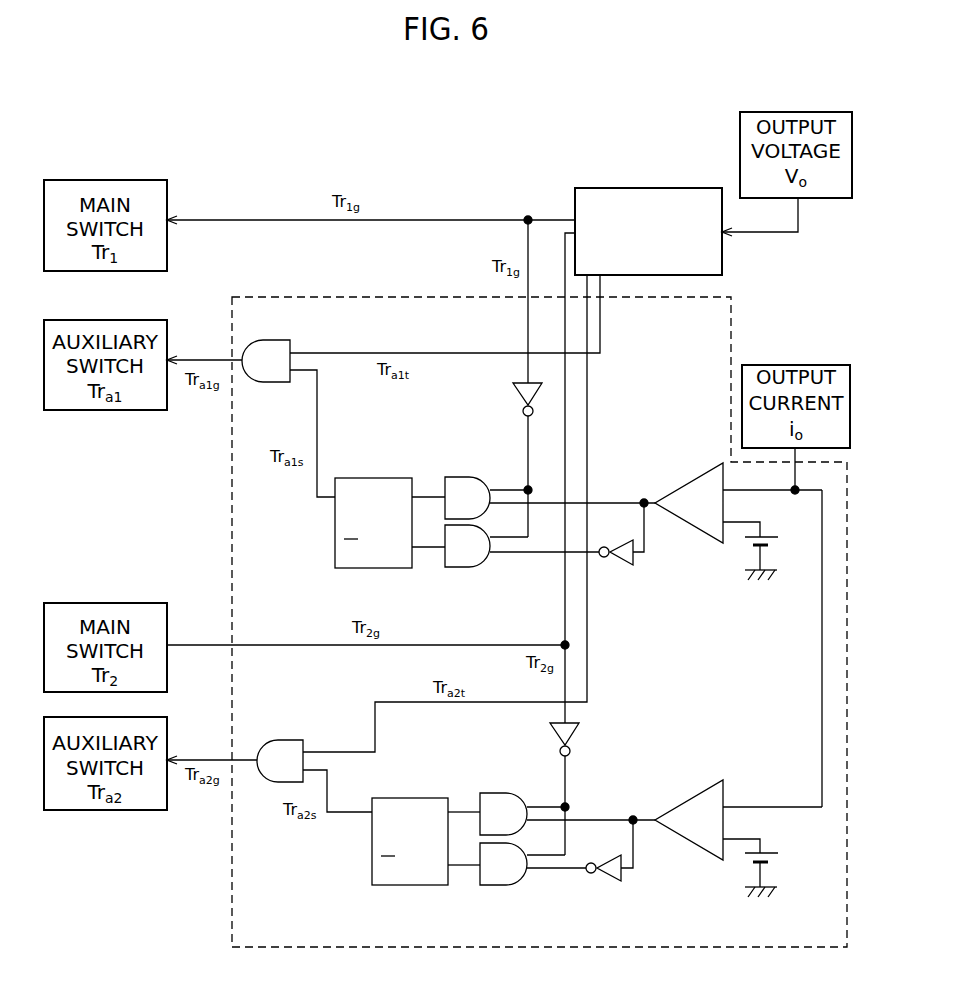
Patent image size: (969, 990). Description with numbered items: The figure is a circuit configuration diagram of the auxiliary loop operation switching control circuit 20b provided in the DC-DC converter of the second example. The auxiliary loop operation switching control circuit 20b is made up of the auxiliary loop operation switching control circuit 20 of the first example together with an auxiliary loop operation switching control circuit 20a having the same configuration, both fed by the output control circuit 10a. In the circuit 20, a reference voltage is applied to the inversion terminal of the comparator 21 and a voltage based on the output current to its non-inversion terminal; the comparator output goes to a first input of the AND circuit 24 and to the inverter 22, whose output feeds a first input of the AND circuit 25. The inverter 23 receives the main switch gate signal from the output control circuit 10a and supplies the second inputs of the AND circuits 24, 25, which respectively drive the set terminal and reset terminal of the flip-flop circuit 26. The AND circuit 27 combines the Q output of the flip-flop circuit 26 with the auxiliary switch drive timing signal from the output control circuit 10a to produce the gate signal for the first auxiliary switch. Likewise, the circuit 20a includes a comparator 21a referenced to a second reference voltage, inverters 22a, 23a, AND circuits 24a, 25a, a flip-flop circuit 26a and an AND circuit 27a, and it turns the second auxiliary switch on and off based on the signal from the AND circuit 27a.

The output control circuit 10a is at (640, 188).
The auxiliary loop operation switching control circuit 20b is at (735, 313).
The auxiliary loop operation switching control circuit 20 is at (656, 535).
The auxiliary loop operation switching control circuit 20a is at (674, 789).
The comparator 21 is at (678, 518).
The comparator 21a is at (697, 792).
The inverter 22 is at (624, 566).
The inverter 22a is at (624, 882).
The inverter 23 is at (513, 396).
The inverter 23a is at (580, 740).
The AND circuit 24 is at (471, 477).
The AND circuit 24a is at (507, 793).
The AND circuit 25 is at (471, 568).
The AND circuit 25a is at (508, 885).
The flip-flop circuit 26 is at (376, 478).
The flip-flop circuit 26a is at (412, 798).
The AND circuit 27 is at (275, 385).
The AND circuit 27a is at (285, 740).